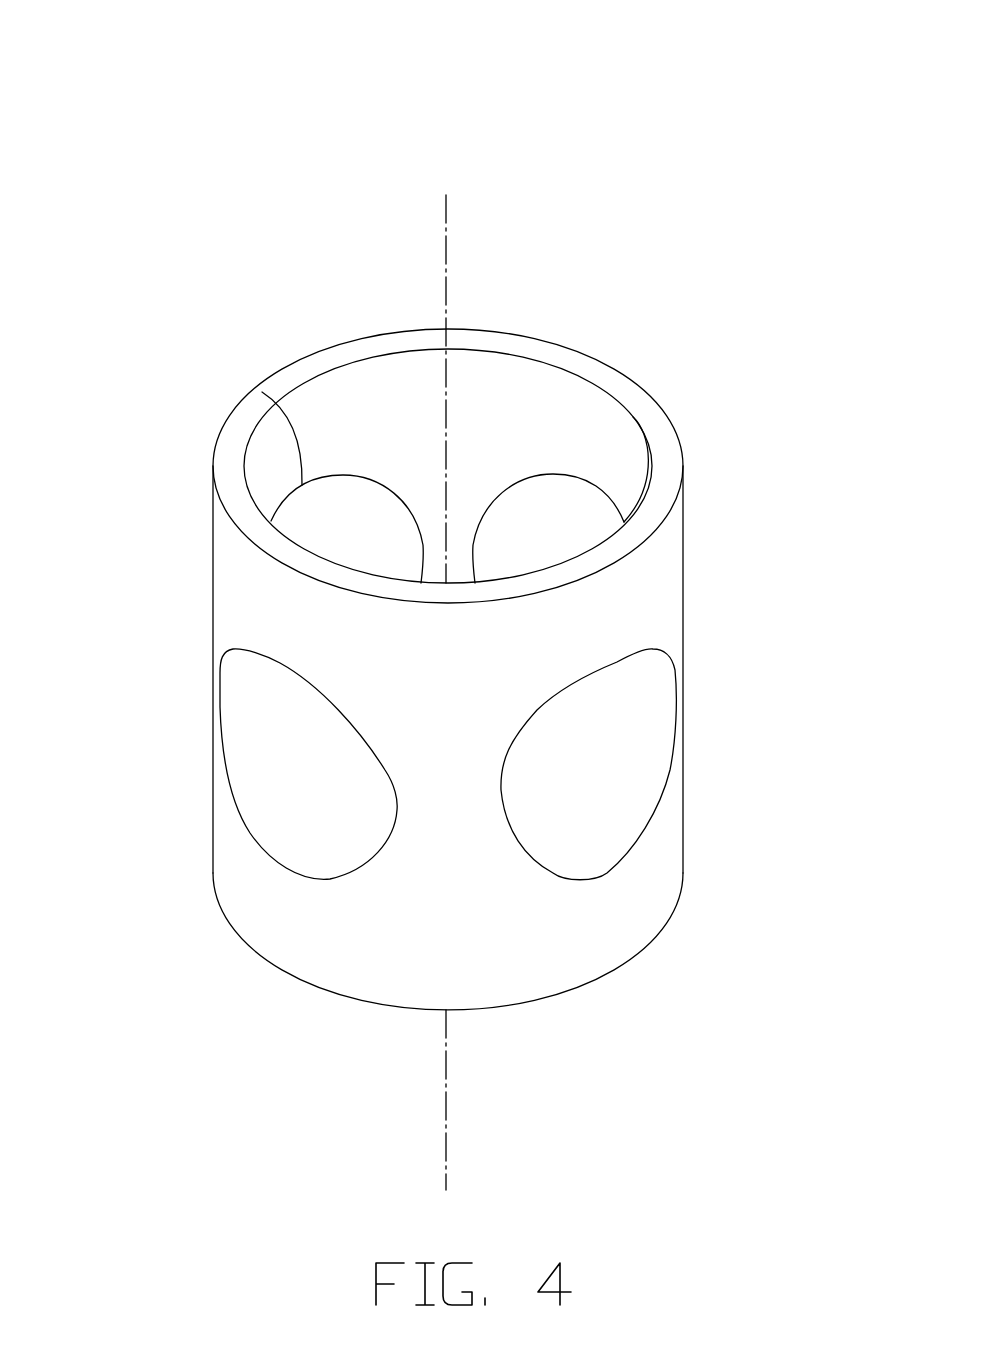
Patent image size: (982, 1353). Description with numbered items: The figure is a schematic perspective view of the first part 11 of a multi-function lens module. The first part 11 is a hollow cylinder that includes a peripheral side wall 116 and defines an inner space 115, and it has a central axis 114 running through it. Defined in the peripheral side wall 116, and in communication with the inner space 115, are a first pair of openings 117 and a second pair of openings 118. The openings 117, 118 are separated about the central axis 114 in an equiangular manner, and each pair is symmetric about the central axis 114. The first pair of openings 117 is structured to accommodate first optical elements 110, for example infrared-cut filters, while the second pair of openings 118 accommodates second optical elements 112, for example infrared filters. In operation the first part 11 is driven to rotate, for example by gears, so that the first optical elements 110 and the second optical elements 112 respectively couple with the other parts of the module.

The first part 11 is at (482, 50).
The first optical elements 110 is at (278, 753).
The second optical elements 112 is at (620, 757).
The central axis 114 is at (446, 258).
The inner space 115 is at (547, 413).
The peripheral side wall 116 is at (240, 572).
The first pair of openings 117 is at (593, 483).
The second pair of openings 118 is at (262, 392).